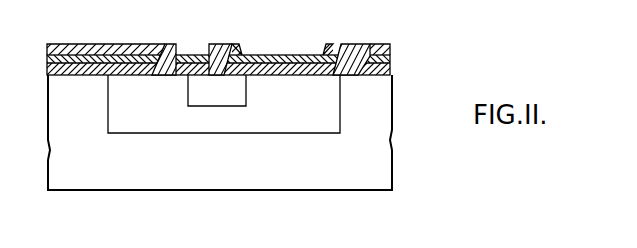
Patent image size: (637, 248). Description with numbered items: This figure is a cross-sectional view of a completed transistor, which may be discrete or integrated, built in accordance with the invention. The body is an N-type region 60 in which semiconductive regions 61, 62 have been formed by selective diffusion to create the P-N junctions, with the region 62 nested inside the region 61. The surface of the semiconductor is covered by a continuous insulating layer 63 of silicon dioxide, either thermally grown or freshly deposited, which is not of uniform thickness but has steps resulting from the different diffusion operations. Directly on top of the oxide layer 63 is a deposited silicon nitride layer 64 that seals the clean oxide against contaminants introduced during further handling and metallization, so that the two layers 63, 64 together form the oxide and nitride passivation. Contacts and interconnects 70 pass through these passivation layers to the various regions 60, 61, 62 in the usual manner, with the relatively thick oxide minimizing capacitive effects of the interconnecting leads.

The N-type region 60 is at (345, 180).
The semiconductive region 61 is at (305, 128).
The semiconductive region 62 is at (243, 93).
The insulating layer 63 is at (392, 69).
The silicon nitride layer 64 is at (391, 54).
The contacts and interconnects 70 is at (209, 44).